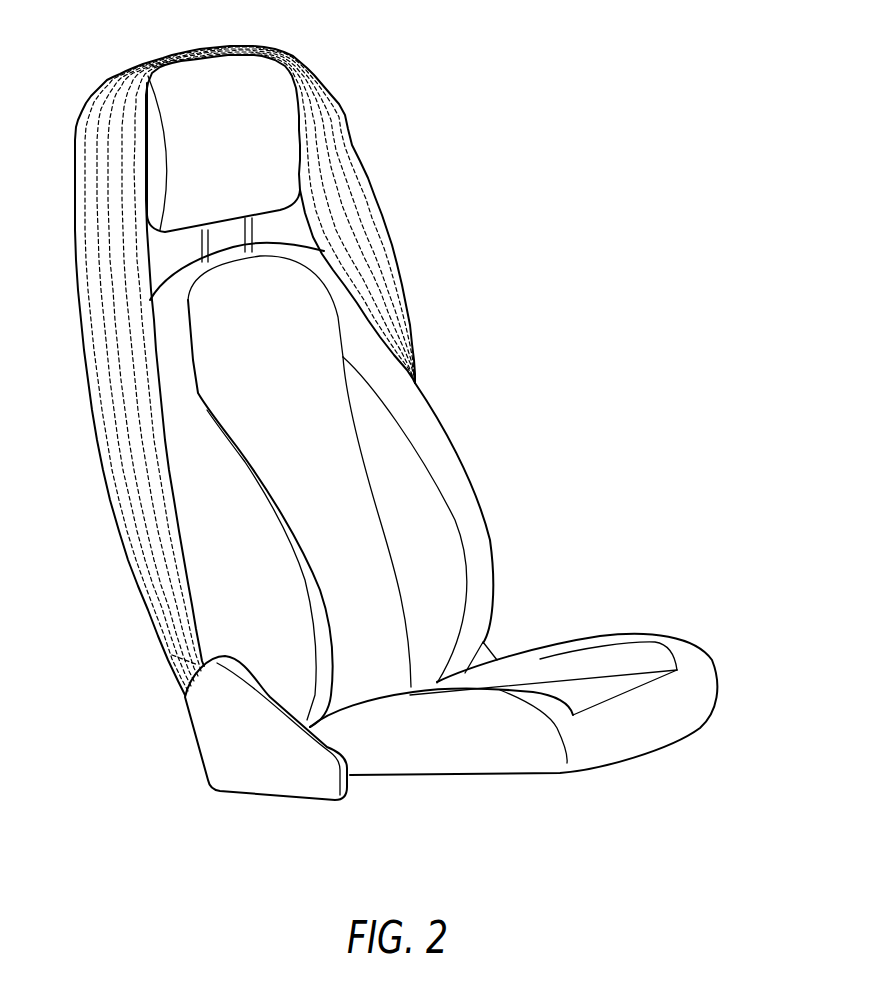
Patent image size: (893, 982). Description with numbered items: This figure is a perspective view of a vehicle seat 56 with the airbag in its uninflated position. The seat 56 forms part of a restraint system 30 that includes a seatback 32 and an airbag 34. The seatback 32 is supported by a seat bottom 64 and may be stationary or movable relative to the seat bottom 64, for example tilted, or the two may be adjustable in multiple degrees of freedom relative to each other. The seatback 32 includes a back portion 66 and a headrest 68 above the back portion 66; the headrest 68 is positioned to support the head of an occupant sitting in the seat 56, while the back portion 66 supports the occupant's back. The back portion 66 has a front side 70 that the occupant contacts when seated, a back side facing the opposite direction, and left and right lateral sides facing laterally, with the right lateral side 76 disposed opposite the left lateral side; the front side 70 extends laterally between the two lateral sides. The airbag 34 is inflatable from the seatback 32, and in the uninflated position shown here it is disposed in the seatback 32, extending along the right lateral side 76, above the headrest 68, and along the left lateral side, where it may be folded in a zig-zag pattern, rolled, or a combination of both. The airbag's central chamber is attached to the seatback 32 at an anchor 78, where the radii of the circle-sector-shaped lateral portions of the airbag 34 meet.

The restraint system 30 is at (236, 357).
The seatback 32 is at (361, 482).
The airbag 34 is at (347, 174).
The seat 56 is at (500, 530).
The seat bottom 64 is at (710, 660).
The back portion 66 is at (347, 284).
The headrest 68 is at (297, 140).
The front side 70 is at (297, 338).
The right lateral side 76 is at (210, 550).
The anchor 78 is at (180, 667).